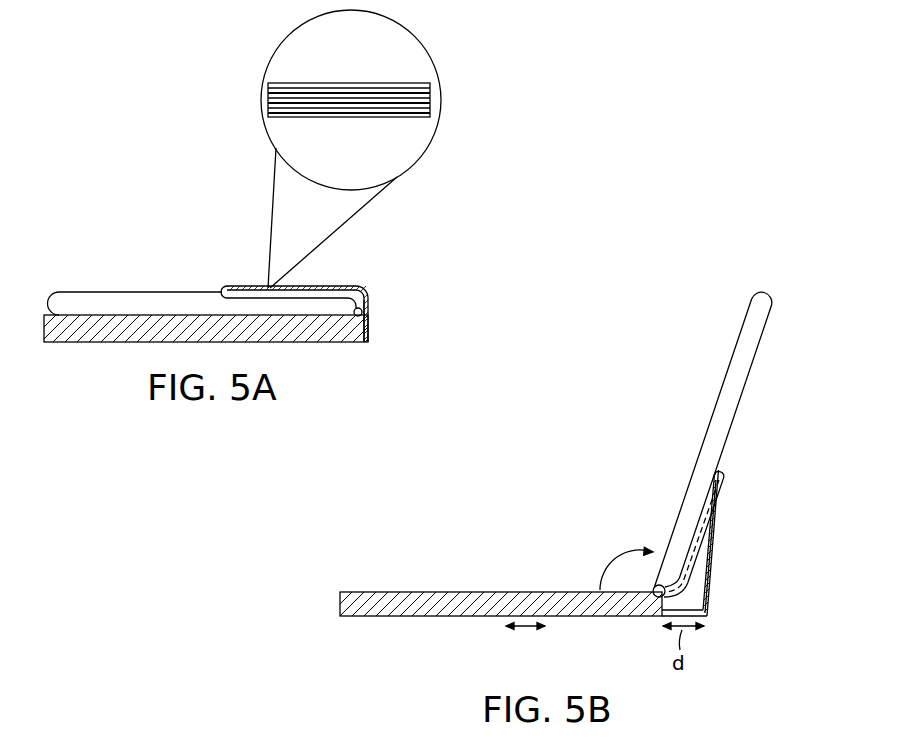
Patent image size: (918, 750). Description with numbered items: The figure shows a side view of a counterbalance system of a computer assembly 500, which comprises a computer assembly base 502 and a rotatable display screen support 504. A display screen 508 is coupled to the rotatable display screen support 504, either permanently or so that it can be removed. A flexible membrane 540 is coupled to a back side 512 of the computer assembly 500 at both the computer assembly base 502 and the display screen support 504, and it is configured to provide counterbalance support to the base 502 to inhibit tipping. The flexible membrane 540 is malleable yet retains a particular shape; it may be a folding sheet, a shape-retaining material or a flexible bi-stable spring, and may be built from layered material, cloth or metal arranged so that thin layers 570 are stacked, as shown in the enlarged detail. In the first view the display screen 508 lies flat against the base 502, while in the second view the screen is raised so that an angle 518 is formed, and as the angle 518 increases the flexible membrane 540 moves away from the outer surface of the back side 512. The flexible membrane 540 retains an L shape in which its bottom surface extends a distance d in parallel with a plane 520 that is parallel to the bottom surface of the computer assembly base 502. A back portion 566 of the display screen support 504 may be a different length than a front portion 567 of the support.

In FIG. 5A, the computer assembly 500 is at (268, 246).
In FIG. 5A, the computer assembly base 502 is at (85, 345).
In FIG. 5B, the computer assembly base 502 is at (383, 605).
In FIG. 5A, the rotatable display screen support 504 is at (375, 265).
In FIG. 5A, the display screen 508 is at (76, 302).
In FIG. 5B, the display screen 508 is at (742, 330).
In FIG. 5A, the back side 512 is at (403, 303).
In FIG. 5B, the back side 512 is at (735, 576).
In FIG. 5B, the angle 518 is at (603, 580).
In FIG. 5B, the plane 520 is at (523, 630).
In FIG. 5A, the flexible membrane 540 is at (364, 294).
In FIG. 5B, the flexible membrane 540 is at (718, 527).
In FIG. 5B, the back portion 566 is at (717, 474).
In FIG. 5B, the front portion 567 is at (665, 550).
In FIG. 5A, the layers 570 is at (441, 102).